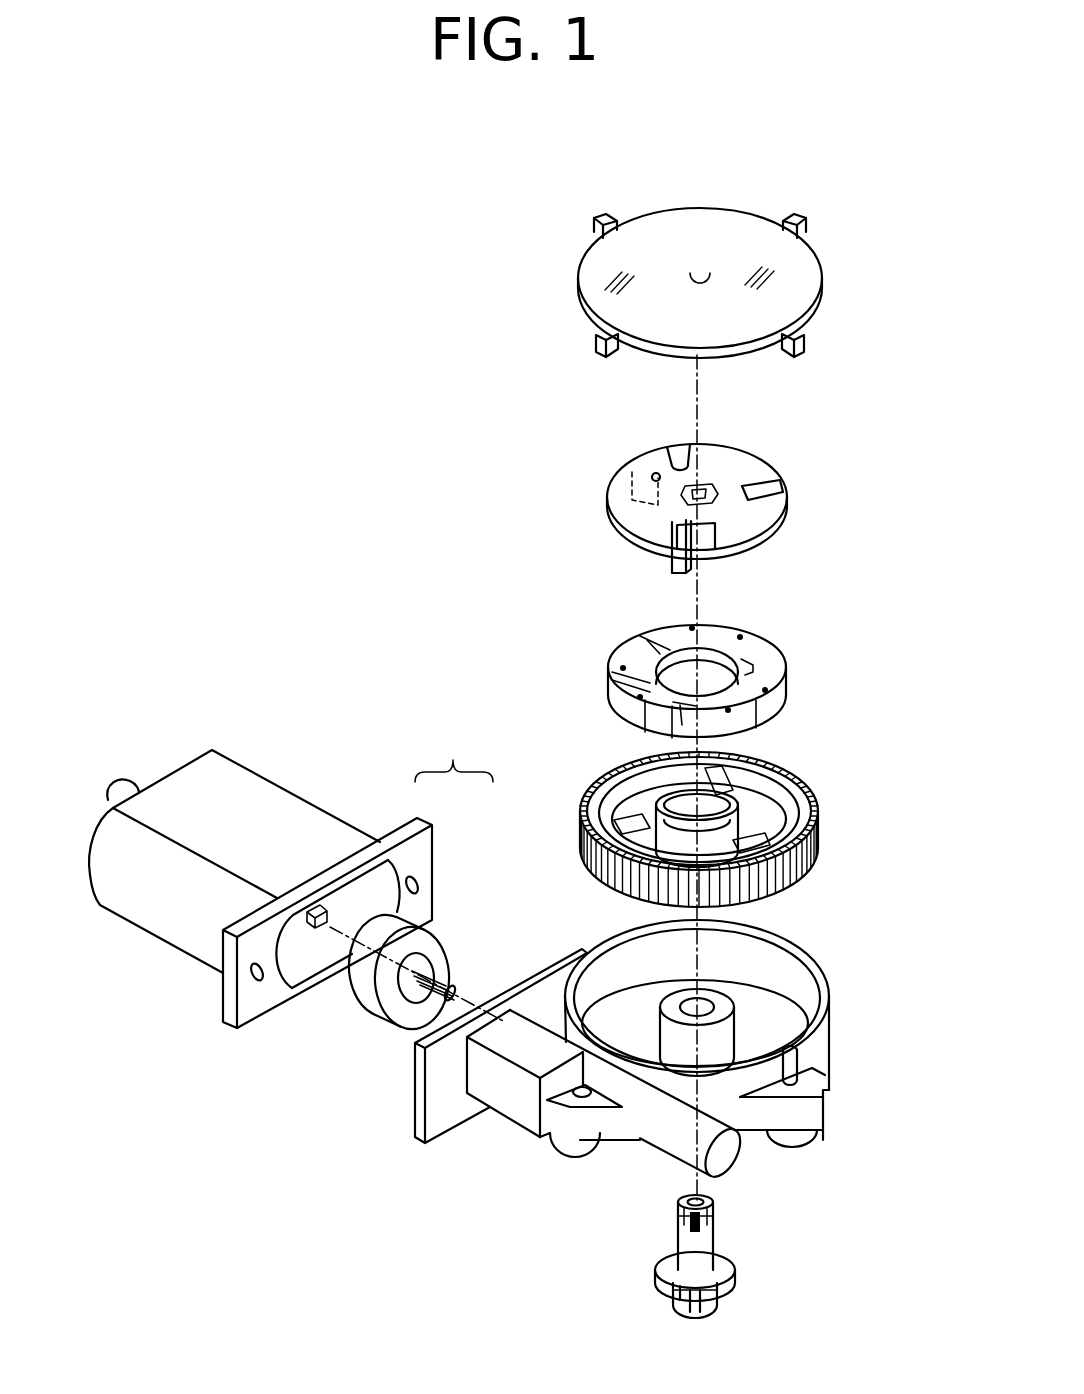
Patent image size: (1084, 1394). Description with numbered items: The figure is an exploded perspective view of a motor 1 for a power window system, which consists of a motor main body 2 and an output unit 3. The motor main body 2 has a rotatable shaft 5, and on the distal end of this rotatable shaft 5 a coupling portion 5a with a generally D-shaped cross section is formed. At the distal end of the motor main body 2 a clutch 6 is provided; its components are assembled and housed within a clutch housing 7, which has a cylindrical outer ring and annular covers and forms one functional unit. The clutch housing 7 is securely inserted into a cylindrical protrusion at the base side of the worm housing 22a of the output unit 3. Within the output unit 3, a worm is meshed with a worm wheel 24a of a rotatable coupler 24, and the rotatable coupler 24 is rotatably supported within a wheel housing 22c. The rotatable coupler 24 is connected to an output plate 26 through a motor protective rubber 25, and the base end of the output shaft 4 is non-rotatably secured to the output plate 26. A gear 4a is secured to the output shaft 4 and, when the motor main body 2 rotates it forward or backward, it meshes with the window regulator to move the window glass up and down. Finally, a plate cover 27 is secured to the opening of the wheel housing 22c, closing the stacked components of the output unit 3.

The motor 1 is at (454, 750).
The motor main body 2 is at (391, 807).
The output unit 3 is at (506, 846).
The output shaft 4 is at (785, 1251).
The gear 4a is at (730, 1298).
The rotatable shaft 5 is at (327, 922).
The coupling portion 5a is at (322, 906).
The clutch 6 is at (366, 1040).
The clutch housing 7 is at (360, 988).
The worm housing 22a is at (660, 1133).
The wheel housing 22c is at (827, 1027).
The rotatable coupler 24 is at (747, 834).
The worm wheel 24a is at (602, 880).
The motor protective rubber 25 is at (845, 652).
The output plate 26 is at (831, 449).
The plate cover 27 is at (860, 266).